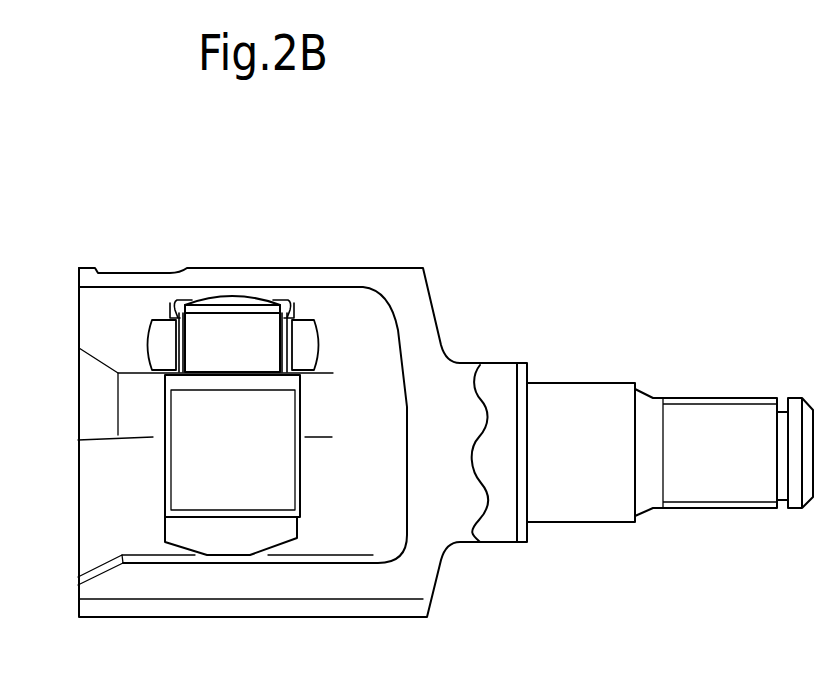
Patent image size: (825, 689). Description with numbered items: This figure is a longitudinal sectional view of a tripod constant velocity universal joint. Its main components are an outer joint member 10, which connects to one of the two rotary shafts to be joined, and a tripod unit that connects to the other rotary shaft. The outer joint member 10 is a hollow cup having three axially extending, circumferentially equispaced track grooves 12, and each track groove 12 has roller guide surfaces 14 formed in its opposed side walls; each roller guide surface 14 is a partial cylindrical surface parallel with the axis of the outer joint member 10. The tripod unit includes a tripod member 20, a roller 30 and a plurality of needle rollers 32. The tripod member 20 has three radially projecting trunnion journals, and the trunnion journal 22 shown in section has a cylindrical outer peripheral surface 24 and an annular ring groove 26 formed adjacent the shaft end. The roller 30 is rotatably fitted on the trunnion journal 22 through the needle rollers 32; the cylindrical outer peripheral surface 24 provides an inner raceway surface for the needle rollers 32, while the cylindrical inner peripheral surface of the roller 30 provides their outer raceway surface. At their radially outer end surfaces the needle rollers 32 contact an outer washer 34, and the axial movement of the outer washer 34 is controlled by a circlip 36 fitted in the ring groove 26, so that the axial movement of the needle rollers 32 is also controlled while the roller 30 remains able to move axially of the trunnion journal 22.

The outer joint member 10 is at (405, 268).
The track groove 12 is at (348, 302).
The roller guide surface 14 is at (118, 350).
The tripod member 20 is at (292, 531).
The trunnion journal 22 is at (228, 298).
The cylindrical outer peripheral surface 24 is at (248, 356).
The annular ring groove 26 is at (252, 305).
The roller 30 is at (307, 324).
The needle roller 32 is at (170, 335).
The outer washer 34 is at (168, 311).
The circlip 36 is at (177, 307).